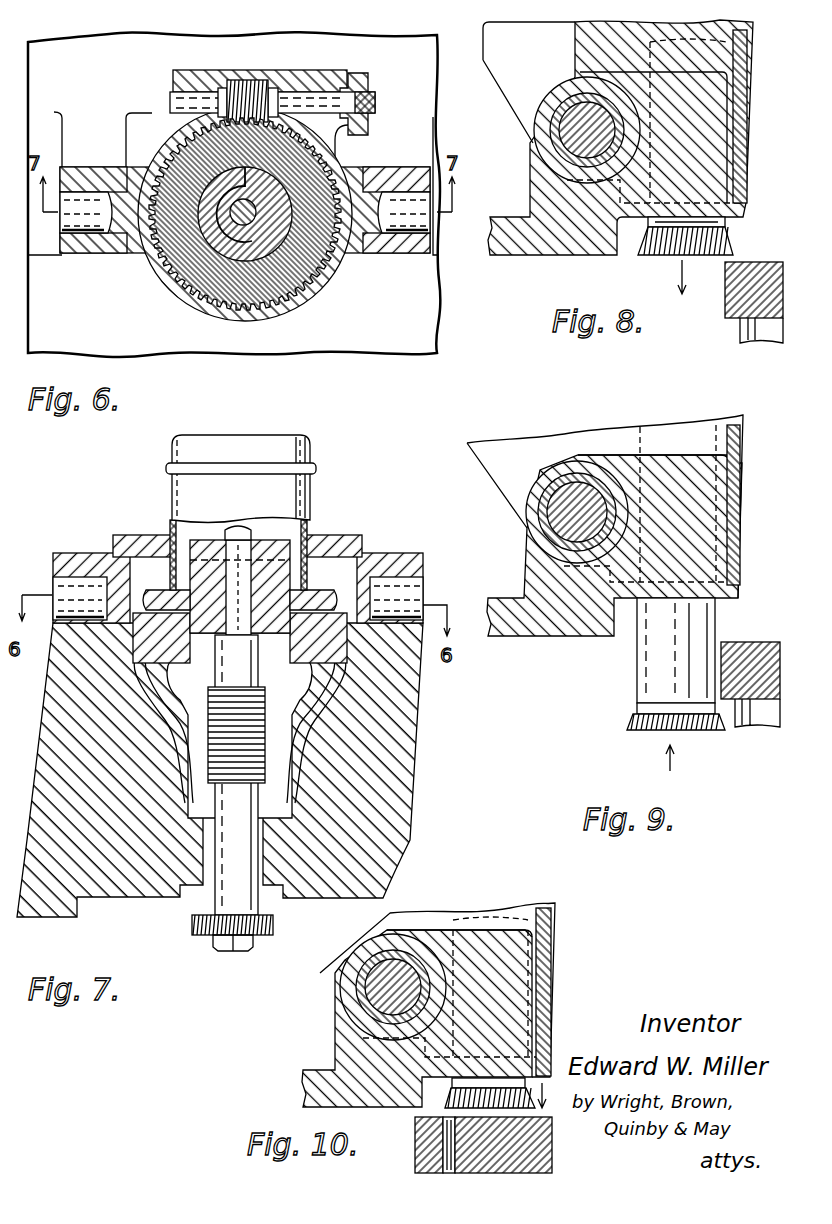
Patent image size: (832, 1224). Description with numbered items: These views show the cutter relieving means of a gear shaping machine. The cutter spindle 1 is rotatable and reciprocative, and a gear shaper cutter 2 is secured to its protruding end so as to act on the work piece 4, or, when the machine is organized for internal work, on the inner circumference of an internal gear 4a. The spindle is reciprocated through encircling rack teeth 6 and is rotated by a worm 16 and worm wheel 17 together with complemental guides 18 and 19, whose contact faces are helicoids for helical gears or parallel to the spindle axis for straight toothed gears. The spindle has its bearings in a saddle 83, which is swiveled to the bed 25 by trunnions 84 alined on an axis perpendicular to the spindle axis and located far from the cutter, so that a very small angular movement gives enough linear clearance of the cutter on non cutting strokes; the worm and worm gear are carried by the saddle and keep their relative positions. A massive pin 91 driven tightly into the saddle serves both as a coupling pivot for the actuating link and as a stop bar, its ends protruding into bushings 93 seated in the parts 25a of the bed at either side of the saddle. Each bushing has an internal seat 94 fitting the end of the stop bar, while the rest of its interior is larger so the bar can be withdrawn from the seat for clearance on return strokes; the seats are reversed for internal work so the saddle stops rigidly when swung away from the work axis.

In FIG. 6, the cutter spindle 1 is at (258, 298).
In FIG. 7, the cutter spindle 1 is at (216, 781).
In FIG. 8, the cutter spindle 1 is at (760, 58).
In FIG. 9, the cutter spindle 1 is at (643, 650).
In FIG. 10, the cutter spindle 1 is at (565, 957).
In FIG. 7, the gear shaper cutter 2 is at (205, 938).
In FIG. 8, the gear shaper cutter 2 is at (735, 238).
In FIG. 9, the gear shaper cutter 2 is at (632, 716).
In FIG. 10, the gear shaper cutter 2 is at (445, 1100).
In FIG. 8, the work piece 4 is at (725, 312).
In FIG. 9, the work piece 4 is at (775, 651).
In FIG. 10, the internal gear 4a is at (415, 1152).
In FIG. 7, the rack teeth 6 is at (266, 722).
In FIG. 6, the worm 16 is at (243, 78).
In FIG. 6, the worm wheel 17 is at (245, 227).
In FIG. 7, the worm wheel 17 is at (325, 598).
In FIG. 6, the guide 18 is at (228, 284).
In FIG. 6, the guide 19 is at (252, 282).
In FIG. 7, the guide 19 is at (310, 522).
In FIG. 6, the bed 25 is at (275, 217).
In FIG. 7, the bed 25 is at (410, 775).
In FIG. 8, the bed 25 is at (611, 157).
In FIG. 9, the bed 25 is at (605, 525).
In FIG. 10, the bed 25 is at (428, 983).
In FIG. 8, the bed parts 25a is at (575, 105).
In FIG. 9, the bed parts 25a is at (541, 479).
In FIG. 10, the bed parts 25a is at (480, 940).
In FIG. 6, the saddle 83 is at (312, 283).
In FIG. 7, the saddle 83 is at (283, 888).
In FIG. 6, the trunnions 84 is at (85, 235).
In FIG. 7, the trunnions 84 is at (85, 583).
In FIG. 8, the pin 91 is at (573, 135).
In FIG. 9, the pin 91 is at (567, 500).
In FIG. 10, the pin 91 is at (405, 965).
In FIG. 8, the bushings 93 is at (561, 141).
In FIG. 9, the bushings 93 is at (548, 480).
In FIG. 10, the bushings 93 is at (372, 960).
In FIG. 8, the internal seat 94 is at (613, 108).
In FIG. 9, the internal seat 94 is at (629, 493).
In FIG. 10, the internal seat 94 is at (352, 992).